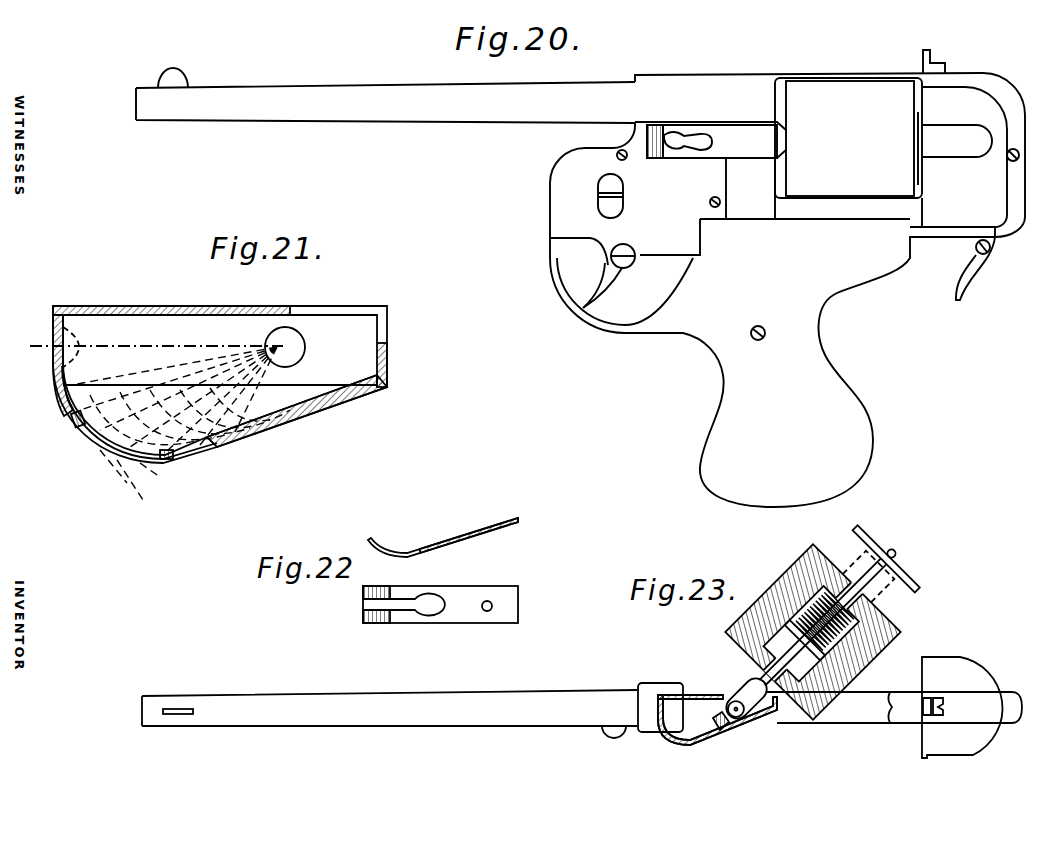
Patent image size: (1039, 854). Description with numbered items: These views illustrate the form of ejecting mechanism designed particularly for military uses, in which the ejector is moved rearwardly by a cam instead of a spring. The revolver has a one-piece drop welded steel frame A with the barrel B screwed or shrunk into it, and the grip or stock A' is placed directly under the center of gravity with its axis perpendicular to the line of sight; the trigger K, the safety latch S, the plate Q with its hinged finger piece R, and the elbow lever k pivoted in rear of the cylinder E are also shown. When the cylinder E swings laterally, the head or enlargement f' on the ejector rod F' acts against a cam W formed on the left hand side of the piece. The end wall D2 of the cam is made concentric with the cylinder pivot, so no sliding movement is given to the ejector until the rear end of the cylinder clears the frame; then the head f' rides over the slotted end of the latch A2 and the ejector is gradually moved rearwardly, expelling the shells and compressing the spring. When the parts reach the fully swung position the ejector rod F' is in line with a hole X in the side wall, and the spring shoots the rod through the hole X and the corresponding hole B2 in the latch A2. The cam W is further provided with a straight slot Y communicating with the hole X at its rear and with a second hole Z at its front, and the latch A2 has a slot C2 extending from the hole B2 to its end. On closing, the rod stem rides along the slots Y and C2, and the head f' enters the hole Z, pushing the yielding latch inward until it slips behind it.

In FIG. 20, the frame A is at (787, 278).
In FIG. 20, the grip or stock A' is at (778, 378).
In FIG. 20, the latch A2 is at (664, 159).
In FIG. 21, the latch A2 is at (273, 422).
In FIG. 22, the latch A2 is at (440, 570).
In FIG. 20, the barrel B is at (385, 93).
In FIG. 23, the barrel B is at (389, 700).
In FIG. 22, the hole or opening B2 is at (432, 616).
In FIG. 22, the slot C2 is at (361, 610).
In FIG. 21, the end wall of the cam D2 is at (65, 353).
In FIG. 23, the end wall of the cam D2 is at (665, 712).
In FIG. 20, the cylinder E is at (848, 138).
In FIG. 23, the cylinder E is at (828, 617).
In FIG. 23, the ejector rod F' is at (801, 661).
In FIG. 23, the head or enlargement on the ejector rod f' is at (741, 699).
In FIG. 20, the elbow lever k is at (930, 133).
In FIG. 20, the trigger K is at (625, 284).
In FIG. 20, the plate Q is at (938, 240).
In FIG. 20, the hinged or pivoted finger piece R is at (975, 268).
In FIG. 20, the safety latch S is at (619, 196).
In FIG. 23, the safety latch S is at (611, 741).
In FIG. 20, the cam W is at (737, 142).
In FIG. 21, the cam W is at (220, 384).
In FIG. 23, the cam W is at (728, 740).
In FIG. 20, the hole X is at (702, 145).
In FIG. 21, the hole X is at (200, 458).
In FIG. 23, the hole X is at (706, 742).
In FIG. 20, the straight slot Y is at (683, 143).
In FIG. 21, the straight slot Y is at (119, 457).
In FIG. 23, the straight slot Y is at (683, 744).
In FIG. 20, the second hole Z is at (669, 136).
In FIG. 21, the second hole Z is at (83, 440).
In FIG. 23, the second hole Z is at (660, 738).